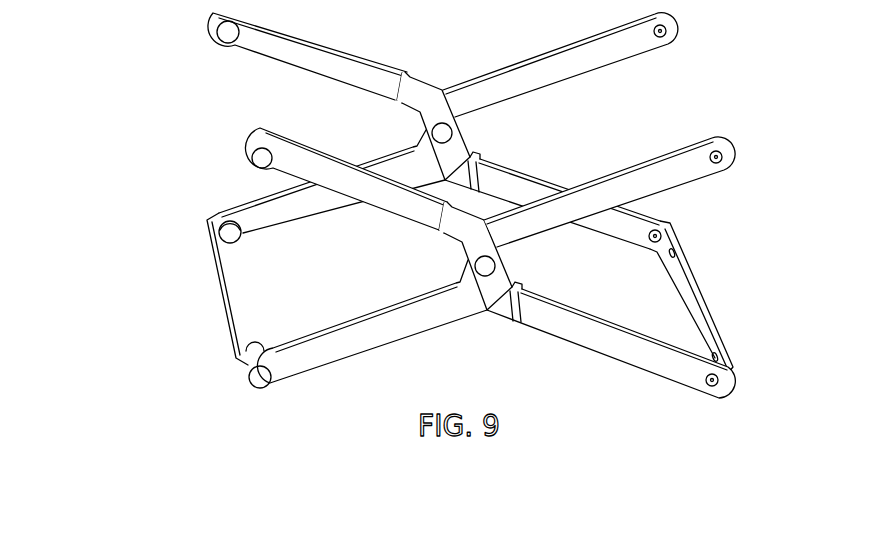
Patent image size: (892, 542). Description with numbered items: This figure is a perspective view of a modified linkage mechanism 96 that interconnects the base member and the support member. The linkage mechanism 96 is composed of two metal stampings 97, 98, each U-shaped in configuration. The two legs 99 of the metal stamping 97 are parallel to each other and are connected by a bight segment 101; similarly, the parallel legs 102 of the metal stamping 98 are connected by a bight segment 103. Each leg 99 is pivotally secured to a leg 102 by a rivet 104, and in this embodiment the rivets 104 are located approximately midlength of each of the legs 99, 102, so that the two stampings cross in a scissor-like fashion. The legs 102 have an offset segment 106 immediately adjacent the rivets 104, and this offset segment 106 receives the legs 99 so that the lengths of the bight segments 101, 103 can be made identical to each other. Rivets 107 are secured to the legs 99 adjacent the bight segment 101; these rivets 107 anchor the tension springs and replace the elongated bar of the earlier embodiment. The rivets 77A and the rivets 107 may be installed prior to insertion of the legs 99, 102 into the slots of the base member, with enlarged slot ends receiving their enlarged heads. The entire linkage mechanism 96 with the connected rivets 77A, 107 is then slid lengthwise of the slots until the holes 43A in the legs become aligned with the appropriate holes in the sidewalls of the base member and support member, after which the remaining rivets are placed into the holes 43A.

The rivet 77A is at (227, 44).
The hole 43A is at (672, 32).
The linkage mechanism 96 is at (468, 326).
The metal stamping 97 is at (378, 336).
The metal stamping 98 is at (633, 356).
The leg 99 is at (295, 211).
The bight segment 101 is at (216, 298).
The leg 102 is at (625, 222).
The bight segment 103 is at (690, 286).
The rivet 104 is at (430, 134).
The offset segment 106 is at (471, 153).
The rivet 107 is at (234, 244).